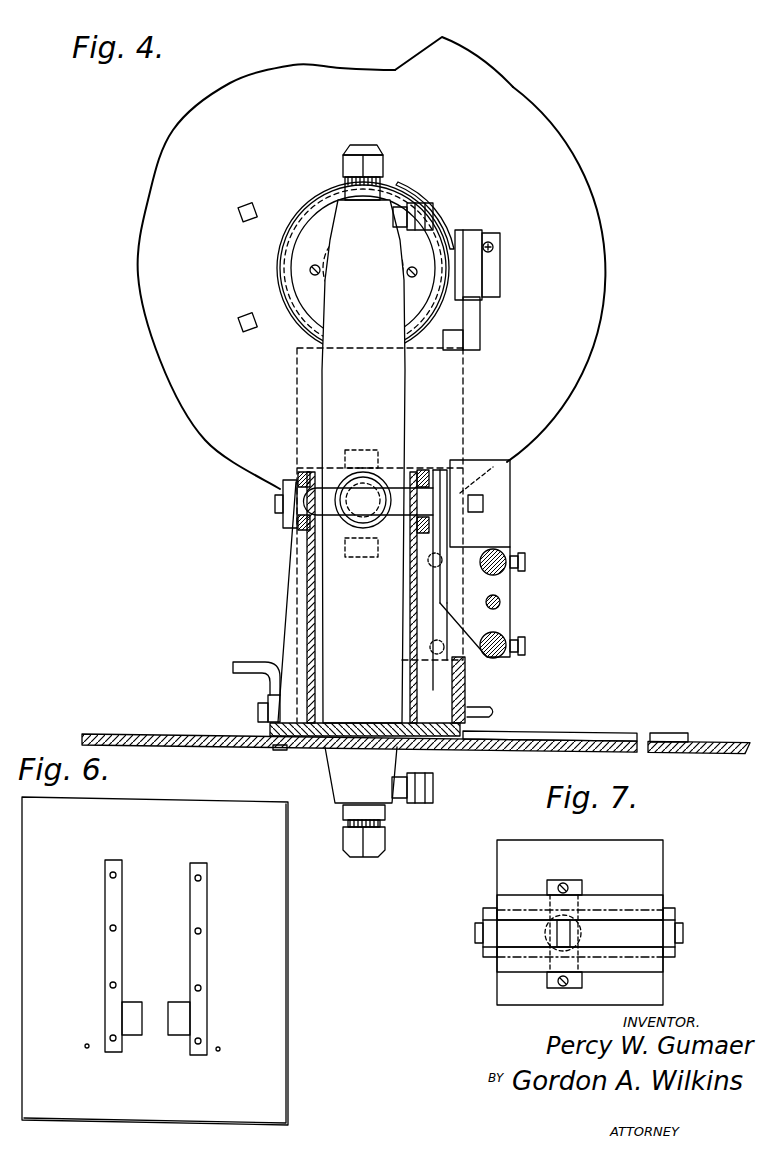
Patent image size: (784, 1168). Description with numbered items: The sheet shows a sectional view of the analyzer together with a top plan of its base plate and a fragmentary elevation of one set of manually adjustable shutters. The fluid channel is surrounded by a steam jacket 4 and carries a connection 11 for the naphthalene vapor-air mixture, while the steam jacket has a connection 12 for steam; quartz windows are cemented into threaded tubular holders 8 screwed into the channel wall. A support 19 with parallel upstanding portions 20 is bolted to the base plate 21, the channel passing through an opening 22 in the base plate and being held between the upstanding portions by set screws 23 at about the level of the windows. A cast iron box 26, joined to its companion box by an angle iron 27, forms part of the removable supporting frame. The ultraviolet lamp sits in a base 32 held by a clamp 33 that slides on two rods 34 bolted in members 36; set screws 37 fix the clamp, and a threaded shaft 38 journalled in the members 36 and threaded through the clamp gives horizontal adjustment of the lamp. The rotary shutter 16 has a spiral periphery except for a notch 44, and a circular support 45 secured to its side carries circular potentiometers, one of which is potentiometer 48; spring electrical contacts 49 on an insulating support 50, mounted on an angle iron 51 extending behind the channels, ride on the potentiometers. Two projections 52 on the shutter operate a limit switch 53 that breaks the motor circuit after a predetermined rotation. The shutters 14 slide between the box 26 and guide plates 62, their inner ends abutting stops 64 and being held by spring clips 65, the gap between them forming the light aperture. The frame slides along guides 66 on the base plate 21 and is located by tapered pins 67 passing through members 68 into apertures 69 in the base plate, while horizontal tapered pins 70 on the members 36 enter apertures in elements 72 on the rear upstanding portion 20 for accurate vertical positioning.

In FIG. 4, the steam jackets 4 is at (398, 390).
In FIG. 4, the tubular holders 8 is at (363, 484).
In FIG. 4, the connections 11 is at (378, 158).
In FIG. 4, the connections 12 is at (432, 214).
In FIG. 4, the shutters 14 is at (283, 516).
In FIG. 7, the shutters 14 is at (513, 920).
In FIG. 4, the rotary shutter 16 is at (583, 190).
In FIG. 4, the support 19 is at (350, 722).
In FIG. 4, the upstanding portions 20 is at (307, 621).
In FIG. 4, the base plate 21 is at (118, 734).
In FIG. 6, the base plate 21 is at (290, 908).
In FIG. 4, the openings 22 is at (297, 752).
In FIG. 6, the openings 22 is at (128, 1002).
In FIG. 4, the set screws 23 is at (297, 473).
In FIG. 4, the box 26 is at (464, 396).
In FIG. 7, the box 26 is at (663, 866).
In FIG. 4, the angle iron 27 is at (492, 712).
In FIG. 4, the base 32 is at (440, 466).
In FIG. 4, the clamp 33 is at (517, 586).
In FIG. 4, the rods 34 is at (506, 555).
In FIG. 4, the members 36 is at (497, 512).
In FIG. 4, the set screws 37 is at (526, 562).
In FIG. 4, the threaded shaft 38 is at (502, 605).
In FIG. 4, the notch 44 is at (372, 64).
In FIG. 4, the circular support 45 is at (290, 272).
In FIG. 4, the circular potentiometer 48 is at (331, 196).
In FIG. 4, the spring electrical contacts 49 is at (414, 196).
In FIG. 4, the insulating support 50 is at (466, 232).
In FIG. 4, the angle iron 51 is at (480, 320).
In FIG. 4, the projections 52 is at (247, 205).
In FIG. 4, the limit switch 53 is at (495, 247).
In FIG. 7, the guide plates 62 is at (598, 895).
In FIG. 4, the stops 64 is at (357, 450).
In FIG. 7, the stops 64 is at (560, 880).
In FIG. 4, the spring clips 65 is at (275, 504).
In FIG. 7, the spring clips 65 is at (475, 932).
In FIG. 4, the guides 66 is at (598, 731).
In FIG. 6, the guides 66 is at (106, 918).
In FIG. 4, the tapered locating pins 67 is at (262, 664).
In FIG. 4, the members 68 is at (268, 701).
In FIG. 4, the apertures 69 is at (257, 735).
In FIG. 6, the apertures 69 is at (86, 1050).
In FIG. 4, the tapered locating pins 70 is at (433, 472).
In FIG. 4, the elements 72 is at (476, 587).